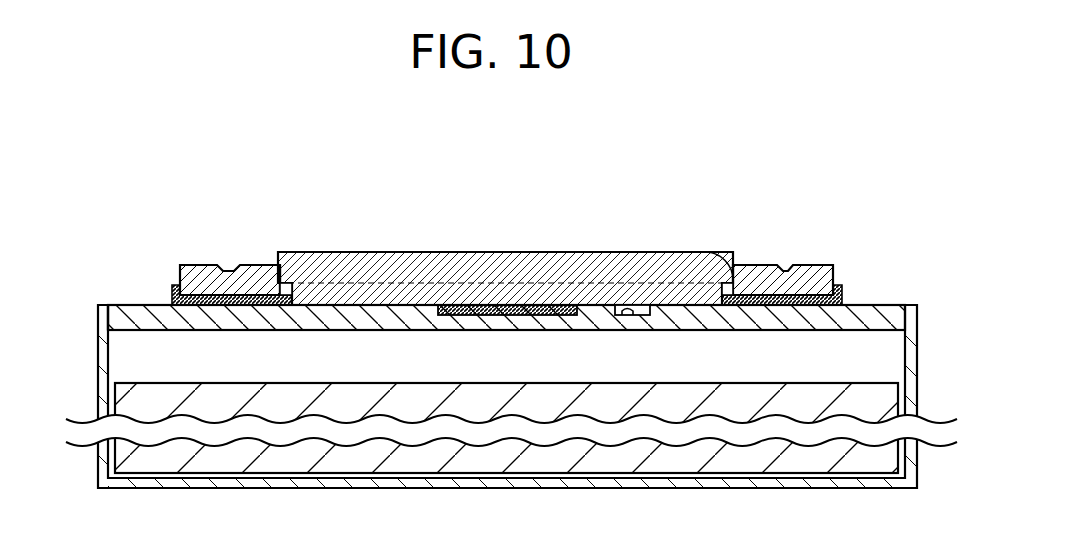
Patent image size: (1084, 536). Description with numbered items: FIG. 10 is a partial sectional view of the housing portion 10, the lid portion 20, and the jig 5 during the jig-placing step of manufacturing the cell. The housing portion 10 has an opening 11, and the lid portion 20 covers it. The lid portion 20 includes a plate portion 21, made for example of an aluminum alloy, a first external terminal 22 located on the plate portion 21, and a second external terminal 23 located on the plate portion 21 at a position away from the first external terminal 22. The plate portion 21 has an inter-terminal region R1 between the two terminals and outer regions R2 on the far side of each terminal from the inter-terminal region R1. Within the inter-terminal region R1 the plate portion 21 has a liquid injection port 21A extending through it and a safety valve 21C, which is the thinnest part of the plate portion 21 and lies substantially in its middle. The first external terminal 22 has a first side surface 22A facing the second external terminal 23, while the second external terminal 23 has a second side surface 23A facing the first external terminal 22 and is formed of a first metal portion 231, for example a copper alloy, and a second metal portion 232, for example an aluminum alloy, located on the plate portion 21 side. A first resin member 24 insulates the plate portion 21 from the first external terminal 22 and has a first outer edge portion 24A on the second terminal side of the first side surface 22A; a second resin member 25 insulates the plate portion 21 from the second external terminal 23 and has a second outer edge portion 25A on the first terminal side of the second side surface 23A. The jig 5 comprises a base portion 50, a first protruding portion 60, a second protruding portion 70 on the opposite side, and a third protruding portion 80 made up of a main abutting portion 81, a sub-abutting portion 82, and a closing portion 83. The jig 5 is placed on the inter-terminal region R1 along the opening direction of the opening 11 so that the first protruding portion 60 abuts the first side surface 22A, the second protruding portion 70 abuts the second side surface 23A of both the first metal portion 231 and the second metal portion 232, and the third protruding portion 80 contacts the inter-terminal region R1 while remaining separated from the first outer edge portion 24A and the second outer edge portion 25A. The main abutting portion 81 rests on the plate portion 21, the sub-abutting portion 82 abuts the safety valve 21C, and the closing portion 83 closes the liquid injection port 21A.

The jig 5 is at (508, 239).
The housing portion 10 is at (98, 344).
The opening 11 is at (117, 303).
The lid portion 20 is at (877, 337).
The plate portion 21 is at (362, 306).
The liquid injection port 21A is at (633, 307).
The safety valve 21C is at (499, 241).
The first external terminal 22 is at (210, 272).
The first side surface 22A is at (312, 258).
The second external terminal 23 is at (804, 236).
The second side surface 23A is at (703, 252).
The first metal portion 231 is at (793, 275).
The second metal portion 232 is at (763, 222).
The first resin member 24 is at (177, 282).
The first outer edge portion 24A is at (272, 296).
The second resin member 25 is at (843, 292).
The second outer edge portion 25A is at (737, 303).
The base portion 50 is at (420, 262).
The first protruding portion 60 is at (286, 289).
The second protruding portion 70 is at (724, 262).
The third protruding portion 80 is at (507, 239).
The main abutting portion 81 is at (468, 297).
The sub-abutting portion 82 is at (513, 310).
The closing portion 83 is at (628, 310).
The inter-terminal region R1 is at (381, 295).
The outer regions R2 is at (126, 303).